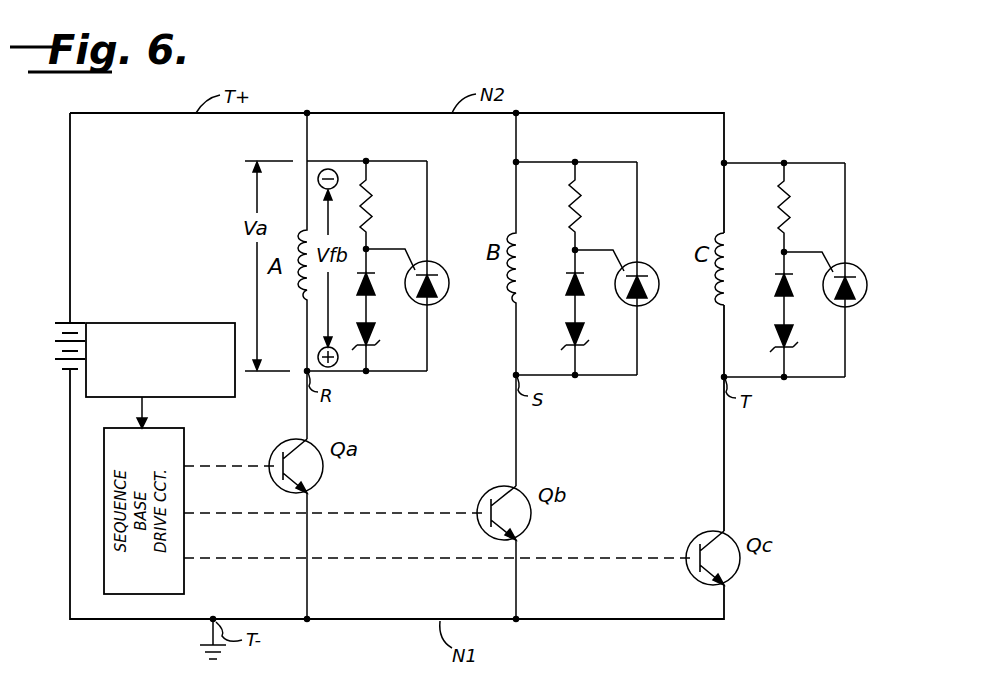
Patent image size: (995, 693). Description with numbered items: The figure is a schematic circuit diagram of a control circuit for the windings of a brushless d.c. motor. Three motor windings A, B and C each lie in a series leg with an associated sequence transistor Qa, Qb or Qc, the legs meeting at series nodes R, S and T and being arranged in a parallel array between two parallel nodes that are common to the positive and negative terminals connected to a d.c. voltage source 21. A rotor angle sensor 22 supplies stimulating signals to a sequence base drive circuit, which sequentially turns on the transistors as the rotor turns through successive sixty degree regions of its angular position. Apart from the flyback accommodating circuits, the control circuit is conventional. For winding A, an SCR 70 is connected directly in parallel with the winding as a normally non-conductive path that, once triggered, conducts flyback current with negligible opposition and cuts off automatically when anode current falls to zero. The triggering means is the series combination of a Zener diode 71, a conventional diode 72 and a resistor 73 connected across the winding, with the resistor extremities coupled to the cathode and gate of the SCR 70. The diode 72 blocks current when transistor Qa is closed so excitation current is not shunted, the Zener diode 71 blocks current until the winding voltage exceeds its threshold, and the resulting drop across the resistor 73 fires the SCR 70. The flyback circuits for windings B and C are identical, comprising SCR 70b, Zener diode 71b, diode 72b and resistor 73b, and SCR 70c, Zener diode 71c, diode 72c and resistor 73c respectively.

The d.c. voltage source 21 is at (72, 323).
The rotor angle sensor 22 is at (130, 323).
The SCR 70 is at (441, 300).
The Zener diode 71 is at (377, 340).
The diode 72 is at (372, 290).
The resistor 73 is at (371, 203).
The SCR 70b is at (651, 300).
The Zener diode 71b is at (586, 340).
The diode 72b is at (581, 290).
The resistor 73b is at (578, 192).
The SCR 70c is at (860, 270).
The Zener diode 71c is at (795, 342).
The diode 72c is at (790, 292).
The resistor 73c is at (787, 194).